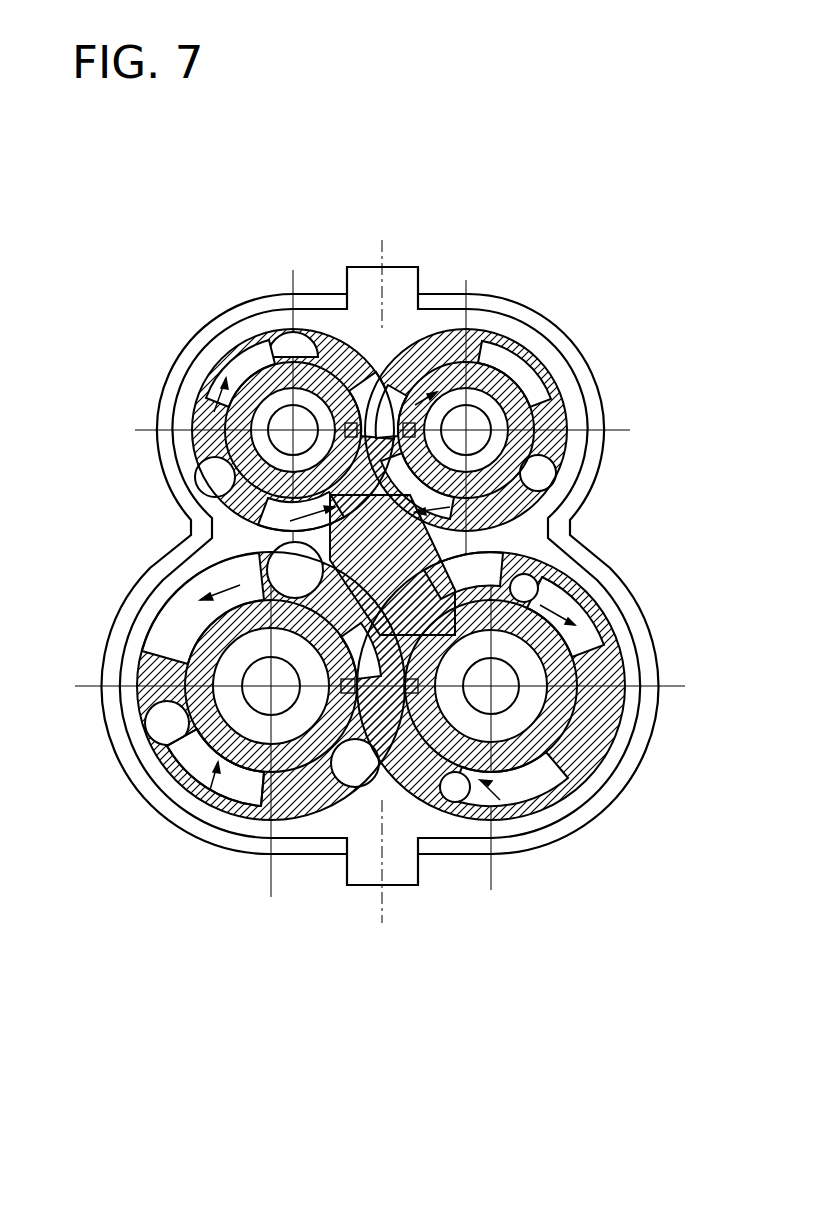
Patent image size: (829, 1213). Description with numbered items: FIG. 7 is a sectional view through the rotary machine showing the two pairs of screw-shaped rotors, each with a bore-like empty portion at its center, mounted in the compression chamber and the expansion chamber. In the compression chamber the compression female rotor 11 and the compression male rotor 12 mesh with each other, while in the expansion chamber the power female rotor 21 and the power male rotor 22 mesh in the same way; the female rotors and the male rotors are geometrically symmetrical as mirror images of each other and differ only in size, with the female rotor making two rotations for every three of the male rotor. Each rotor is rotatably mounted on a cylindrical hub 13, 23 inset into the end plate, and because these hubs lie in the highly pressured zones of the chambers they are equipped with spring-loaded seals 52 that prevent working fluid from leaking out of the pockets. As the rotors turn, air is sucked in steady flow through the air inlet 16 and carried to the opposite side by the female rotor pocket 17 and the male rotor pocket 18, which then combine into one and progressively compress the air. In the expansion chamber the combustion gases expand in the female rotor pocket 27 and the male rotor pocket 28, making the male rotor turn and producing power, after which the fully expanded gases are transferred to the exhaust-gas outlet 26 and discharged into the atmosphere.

The compression female rotor 11 is at (178, 413).
The compression male rotor 12 is at (578, 416).
The cylindrical hub 13 is at (213, 413).
The air inlet 16 is at (390, 257).
The female rotor pocket 17 is at (229, 367).
The male rotor pocket 18 is at (517, 362).
The power female rotor 21 is at (261, 756).
The power male rotor 22 is at (491, 760).
The cylindrical hub 23 is at (210, 762).
The exhaust-gas outlet 26 is at (373, 892).
The female rotor pocket 27 is at (225, 790).
The male rotor pocket 28 is at (518, 792).
The seal 52 is at (404, 420).